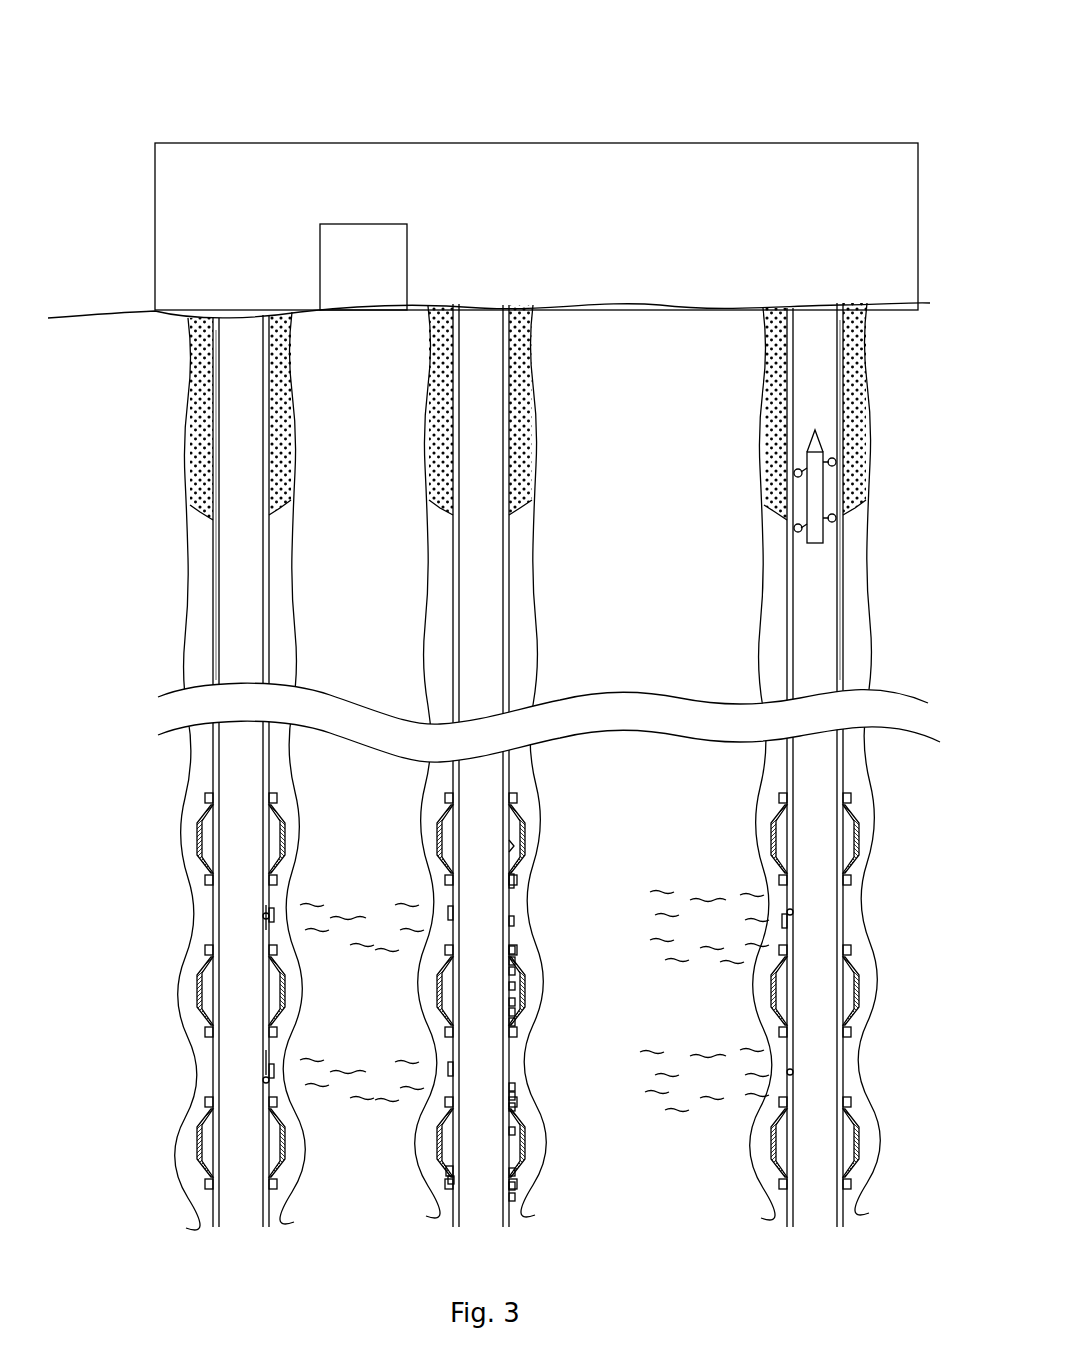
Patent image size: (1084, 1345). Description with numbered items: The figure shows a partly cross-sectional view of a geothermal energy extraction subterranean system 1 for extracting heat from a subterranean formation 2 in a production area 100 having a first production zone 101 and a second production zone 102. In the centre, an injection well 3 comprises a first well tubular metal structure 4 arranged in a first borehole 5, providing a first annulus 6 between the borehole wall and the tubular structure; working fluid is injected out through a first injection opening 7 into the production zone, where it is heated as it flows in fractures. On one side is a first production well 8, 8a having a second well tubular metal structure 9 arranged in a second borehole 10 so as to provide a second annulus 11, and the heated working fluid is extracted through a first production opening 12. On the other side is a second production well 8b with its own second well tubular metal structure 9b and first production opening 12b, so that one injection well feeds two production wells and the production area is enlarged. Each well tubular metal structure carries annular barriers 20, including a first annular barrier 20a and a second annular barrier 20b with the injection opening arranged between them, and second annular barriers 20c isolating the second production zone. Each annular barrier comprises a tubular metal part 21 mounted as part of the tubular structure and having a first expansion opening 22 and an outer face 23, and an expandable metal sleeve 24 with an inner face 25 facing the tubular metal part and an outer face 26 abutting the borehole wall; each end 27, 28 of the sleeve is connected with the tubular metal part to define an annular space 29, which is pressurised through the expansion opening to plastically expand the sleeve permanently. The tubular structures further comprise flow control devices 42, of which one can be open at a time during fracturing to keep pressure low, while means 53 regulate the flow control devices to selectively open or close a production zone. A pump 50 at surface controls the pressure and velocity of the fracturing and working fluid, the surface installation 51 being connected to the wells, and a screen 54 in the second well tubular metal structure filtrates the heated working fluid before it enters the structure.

The geothermal energy extraction subterranean system 1 is at (782, 98).
The subterranean formation 2 is at (371, 863).
The injection well 3 is at (490, 550).
The first well tubular metal structure 4 is at (510, 636).
The first borehole 5 is at (530, 586).
The first annulus 6 is at (522, 847).
The first injection opening 7 is at (526, 1087).
The first production well 8 is at (205, 513).
The first production well 8a is at (215, 571).
The second production well 8b is at (846, 582).
The second well tubular metal structure 9 is at (215, 613).
The second well tubular metal structure 9b is at (846, 613).
The second borehole 10 is at (215, 666).
The second annulus 11 is at (856, 666).
The first production opening 12 is at (266, 1082).
The first production opening 12b is at (268, 916).
The annular barrier 20 is at (502, 981).
The first annular barrier 20a is at (206, 988).
The second annular barrier 20b is at (517, 1148).
The second annular barrier 20c is at (205, 832).
The tubular metal part 21 is at (522, 962).
The first expansion opening 22 is at (526, 1002).
The outer face 23 is at (522, 952).
The expandable metal sleeve 24 is at (522, 972).
The inner face 25 is at (440, 1172).
The outer face 26 is at (526, 1022).
The end 27 is at (522, 922).
The end 28 is at (526, 1012).
The annular space 29 is at (526, 986).
The flow control device 42 is at (265, 916).
The pump 50 is at (352, 245).
The surface facility 51 is at (205, 190).
The means for regulating the flow control devices 53 is at (818, 483).
The screen 54 is at (280, 920).
The production area 100 is at (387, 1008).
The production zone 101 is at (387, 1093).
The second production zone 102 is at (392, 945).